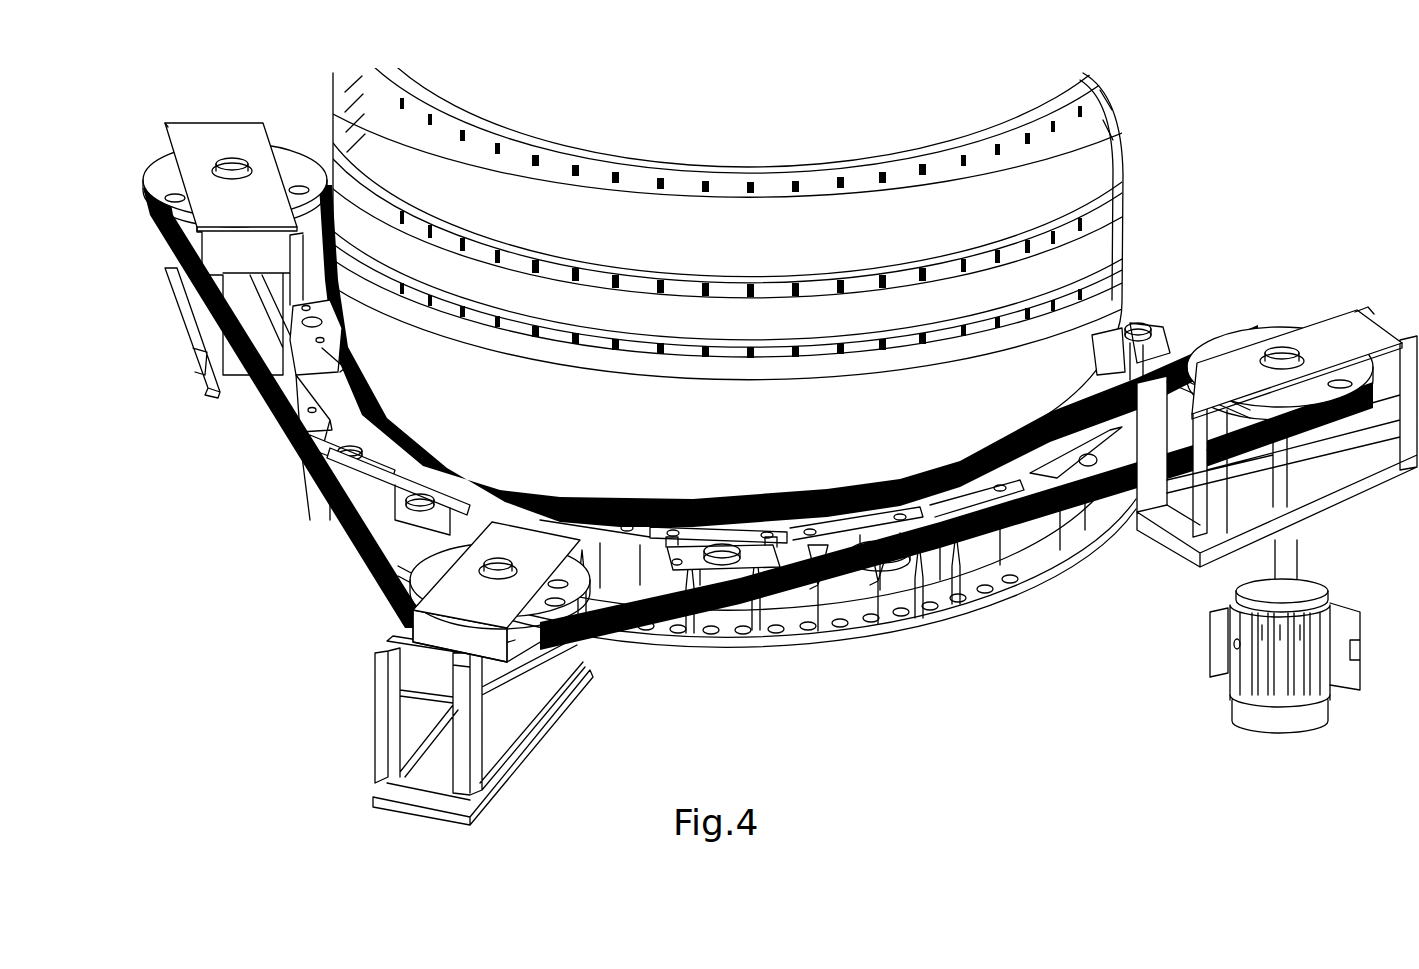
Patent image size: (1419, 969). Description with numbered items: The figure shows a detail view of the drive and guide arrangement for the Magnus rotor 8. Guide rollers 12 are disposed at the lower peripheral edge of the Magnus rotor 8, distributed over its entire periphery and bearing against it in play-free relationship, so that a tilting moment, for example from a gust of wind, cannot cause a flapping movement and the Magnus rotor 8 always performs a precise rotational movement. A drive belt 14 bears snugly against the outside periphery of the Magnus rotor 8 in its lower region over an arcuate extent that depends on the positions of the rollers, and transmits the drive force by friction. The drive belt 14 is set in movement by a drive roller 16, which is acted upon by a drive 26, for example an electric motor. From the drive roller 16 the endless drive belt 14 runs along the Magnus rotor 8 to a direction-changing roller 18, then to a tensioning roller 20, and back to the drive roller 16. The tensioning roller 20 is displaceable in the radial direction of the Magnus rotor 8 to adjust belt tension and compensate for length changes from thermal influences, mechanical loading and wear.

The Magnus rotor 8 is at (940, 232).
The guide rollers 12 is at (322, 407).
The drive belt 14 is at (596, 490).
The drive roller 16 is at (1268, 340).
The direction-changing roller 18 is at (160, 165).
The tensioning roller 20 is at (427, 577).
The drive 26 is at (1243, 672).